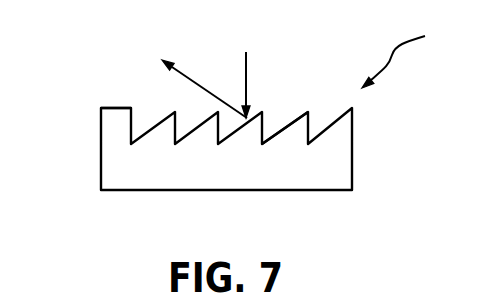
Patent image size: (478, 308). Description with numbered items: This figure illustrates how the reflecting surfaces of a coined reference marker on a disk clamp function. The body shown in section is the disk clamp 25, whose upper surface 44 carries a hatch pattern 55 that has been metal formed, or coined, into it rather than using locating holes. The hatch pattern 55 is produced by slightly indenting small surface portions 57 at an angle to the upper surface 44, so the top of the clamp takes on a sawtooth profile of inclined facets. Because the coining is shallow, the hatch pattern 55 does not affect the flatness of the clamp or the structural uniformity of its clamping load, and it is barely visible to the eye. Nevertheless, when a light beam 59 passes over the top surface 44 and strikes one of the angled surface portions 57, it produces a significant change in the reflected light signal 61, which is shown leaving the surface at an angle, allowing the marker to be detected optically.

The substrate body 25 is at (352, 150).
The upper surface 44 is at (119, 107).
The hatch pattern 55 is at (408, 56).
The surface portions 57 is at (296, 117).
The beam 59 is at (250, 68).
The reflected light signal 61 is at (193, 81).